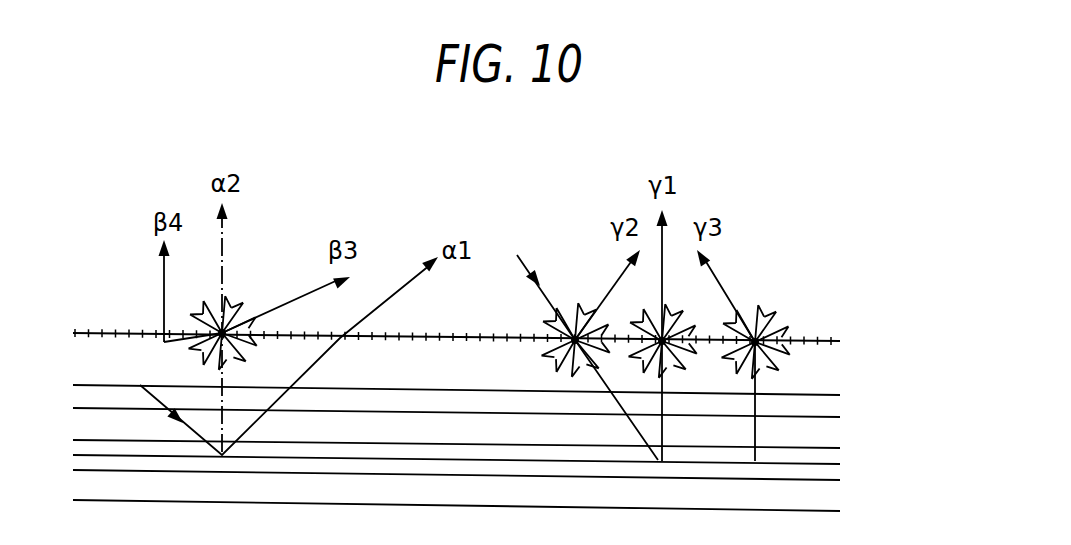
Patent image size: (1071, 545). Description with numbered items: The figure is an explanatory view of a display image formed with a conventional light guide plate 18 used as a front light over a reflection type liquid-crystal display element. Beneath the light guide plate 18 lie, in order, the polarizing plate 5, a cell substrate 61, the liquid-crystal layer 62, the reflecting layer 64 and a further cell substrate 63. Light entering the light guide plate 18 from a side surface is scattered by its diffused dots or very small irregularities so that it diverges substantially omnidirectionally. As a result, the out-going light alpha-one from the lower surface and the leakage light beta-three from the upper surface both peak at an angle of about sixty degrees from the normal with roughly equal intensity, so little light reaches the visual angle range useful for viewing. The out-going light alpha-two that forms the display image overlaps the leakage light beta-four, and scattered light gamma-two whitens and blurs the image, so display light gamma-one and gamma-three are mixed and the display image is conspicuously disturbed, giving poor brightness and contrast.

The light guide plate 18 is at (827, 372).
The polarizing plate 5 is at (826, 405).
The cell substrate 61 is at (826, 428).
The liquid-crystal layer 62 is at (826, 455).
The reflecting layer 64 is at (826, 473).
The cell substrate 63 is at (826, 502).